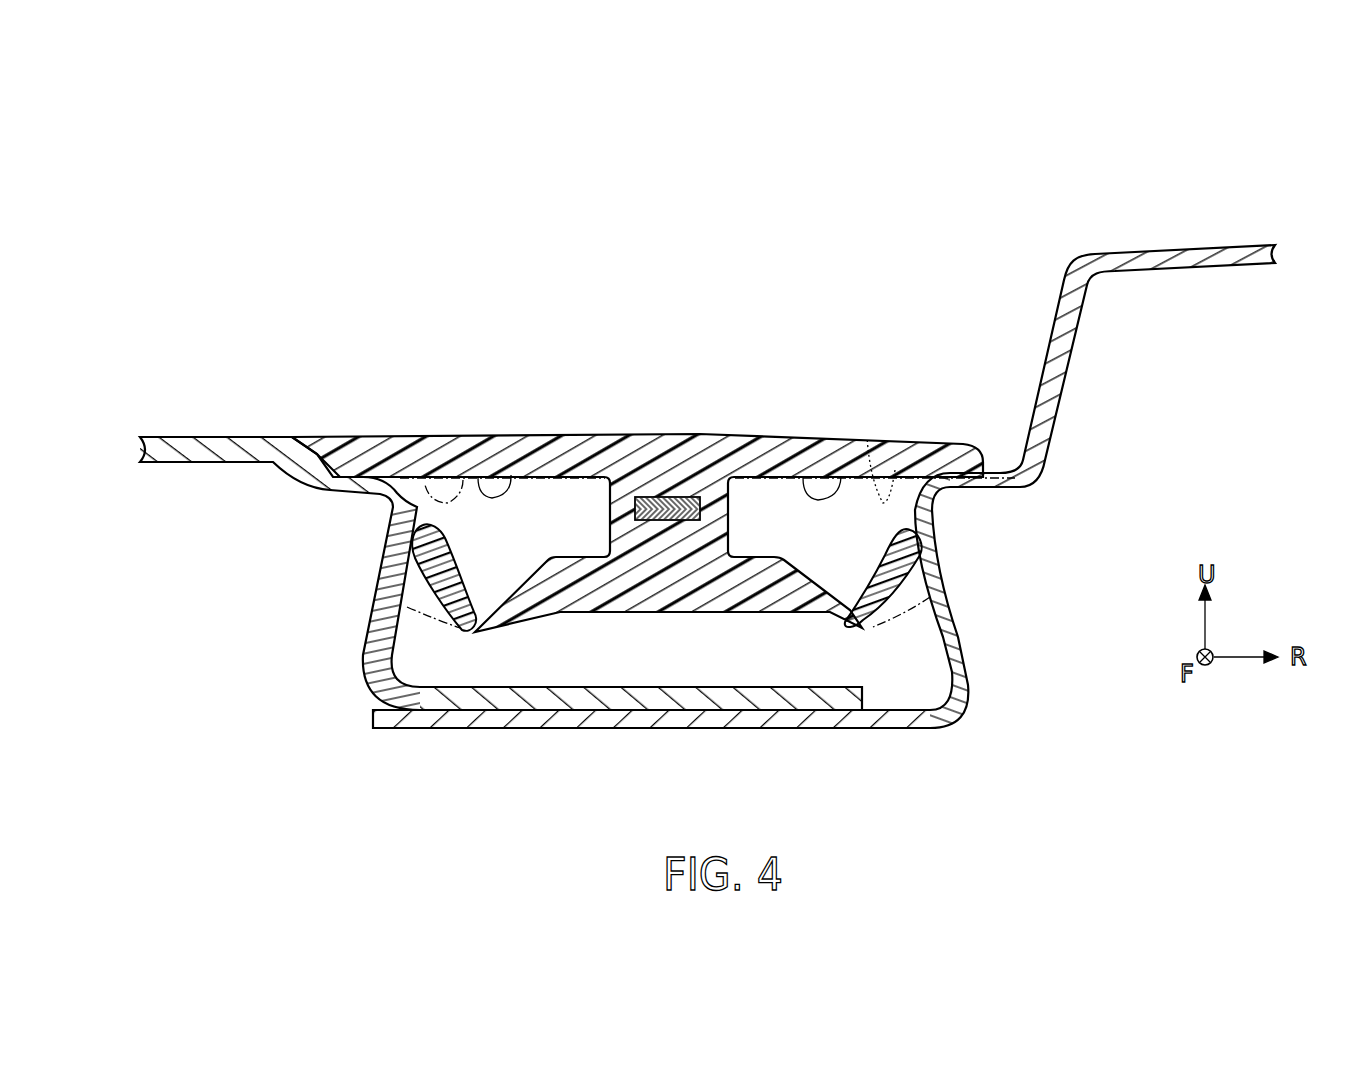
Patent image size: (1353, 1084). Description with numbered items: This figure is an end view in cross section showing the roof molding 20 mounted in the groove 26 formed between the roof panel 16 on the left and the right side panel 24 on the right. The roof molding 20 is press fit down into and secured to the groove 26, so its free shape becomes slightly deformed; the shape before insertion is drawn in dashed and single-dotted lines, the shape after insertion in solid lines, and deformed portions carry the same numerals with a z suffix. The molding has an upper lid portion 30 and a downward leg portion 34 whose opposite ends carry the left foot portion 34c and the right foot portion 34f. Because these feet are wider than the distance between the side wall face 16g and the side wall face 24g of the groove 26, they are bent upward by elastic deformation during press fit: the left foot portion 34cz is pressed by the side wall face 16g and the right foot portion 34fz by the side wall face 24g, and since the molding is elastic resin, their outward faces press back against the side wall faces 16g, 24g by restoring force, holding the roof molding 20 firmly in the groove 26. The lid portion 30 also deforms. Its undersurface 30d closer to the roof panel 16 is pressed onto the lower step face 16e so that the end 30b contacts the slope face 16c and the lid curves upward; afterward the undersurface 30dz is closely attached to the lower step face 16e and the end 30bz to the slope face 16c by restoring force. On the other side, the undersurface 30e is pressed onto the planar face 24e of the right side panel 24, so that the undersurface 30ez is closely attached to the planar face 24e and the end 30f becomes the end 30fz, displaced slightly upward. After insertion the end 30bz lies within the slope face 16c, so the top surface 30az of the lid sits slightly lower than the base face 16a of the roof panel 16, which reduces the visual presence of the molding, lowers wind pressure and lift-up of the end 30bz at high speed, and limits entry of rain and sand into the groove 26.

The roof panel 16 is at (172, 428).
The base face 16a is at (192, 435).
The slope face 16c is at (350, 446).
The lower step face 16e is at (390, 507).
The side wall face 16g is at (372, 647).
The roof molding 20 is at (717, 428).
The right side panel 24 is at (1262, 238).
The planar face 24e is at (1031, 428).
The side wall face 24g is at (950, 660).
The groove 26 is at (666, 673).
The lid portion 30 is at (622, 434).
The top surface 30az is at (397, 435).
The end 30b is at (300, 450).
The end 30bz is at (303, 435).
The undersurface 30d is at (463, 470).
The undersurface 30dz is at (511, 470).
The undersurface 30e is at (895, 470).
The undersurface 30ez is at (841, 475).
The end 30f is at (993, 473).
The end 30fz is at (968, 467).
The leg portion 34 is at (688, 614).
The left foot portion 34c is at (375, 557).
The left foot portion 34cz is at (395, 512).
The right foot portion 34f is at (948, 560).
The right foot portion 34fz is at (920, 503).